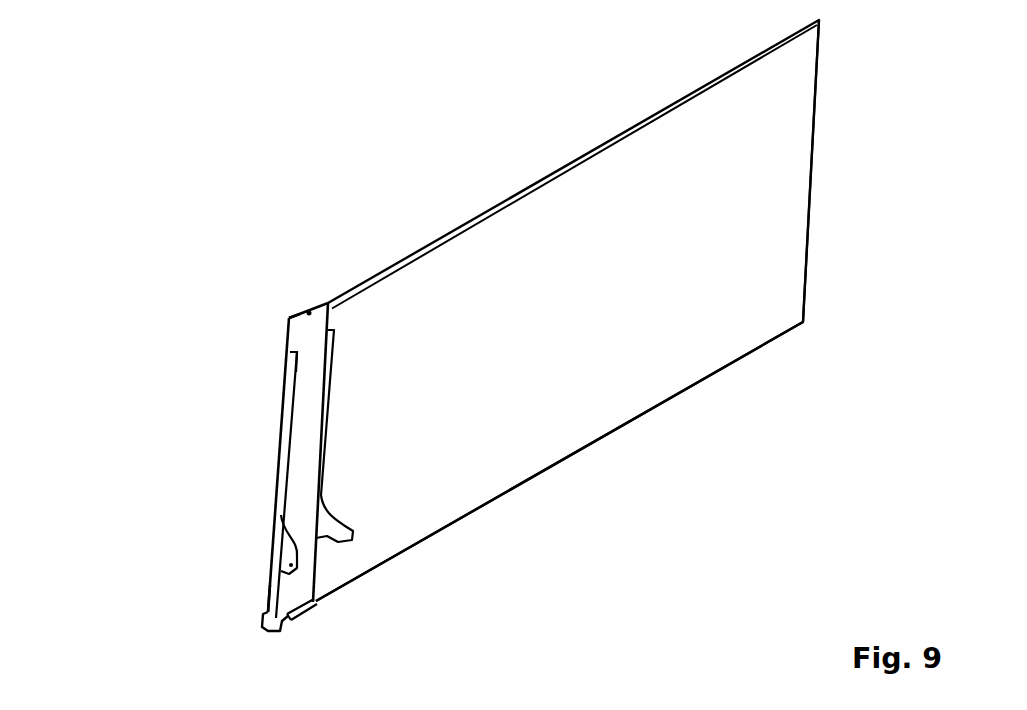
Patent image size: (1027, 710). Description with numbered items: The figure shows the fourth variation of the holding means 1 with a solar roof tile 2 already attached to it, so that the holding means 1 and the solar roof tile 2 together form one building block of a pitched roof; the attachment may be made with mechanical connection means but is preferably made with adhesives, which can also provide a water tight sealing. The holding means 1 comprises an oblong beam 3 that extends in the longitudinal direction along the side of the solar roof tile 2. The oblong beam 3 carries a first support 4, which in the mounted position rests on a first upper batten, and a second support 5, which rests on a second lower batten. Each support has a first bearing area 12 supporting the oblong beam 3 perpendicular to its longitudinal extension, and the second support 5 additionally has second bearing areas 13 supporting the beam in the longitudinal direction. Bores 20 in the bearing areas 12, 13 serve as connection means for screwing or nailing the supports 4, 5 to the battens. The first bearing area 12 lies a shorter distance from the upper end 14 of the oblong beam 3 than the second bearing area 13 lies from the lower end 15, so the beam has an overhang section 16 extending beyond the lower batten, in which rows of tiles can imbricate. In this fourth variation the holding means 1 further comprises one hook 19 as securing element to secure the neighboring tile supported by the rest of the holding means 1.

The holding means 1 is at (303, 357).
The solar roof tile 2 is at (550, 326).
The oblong beam 3 is at (313, 476).
The first support 4 is at (283, 367).
The second support 5 is at (263, 601).
The first bearing area 12 is at (305, 380).
The second bearing area 13 is at (292, 406).
The upper end 14 is at (242, 273).
The lower end 15 is at (346, 623).
The overhang section 16 is at (492, 502).
The hook 19 is at (264, 625).
The bores 20 is at (307, 311).